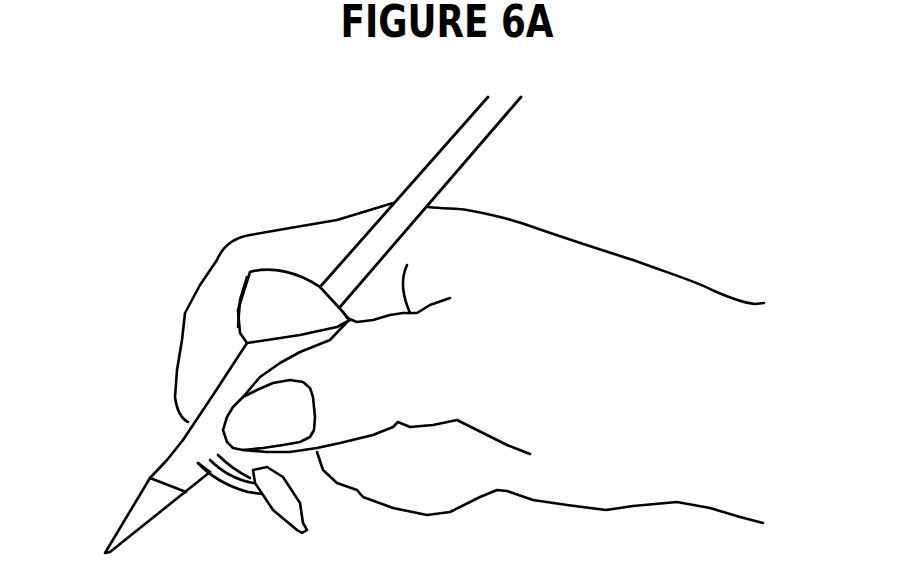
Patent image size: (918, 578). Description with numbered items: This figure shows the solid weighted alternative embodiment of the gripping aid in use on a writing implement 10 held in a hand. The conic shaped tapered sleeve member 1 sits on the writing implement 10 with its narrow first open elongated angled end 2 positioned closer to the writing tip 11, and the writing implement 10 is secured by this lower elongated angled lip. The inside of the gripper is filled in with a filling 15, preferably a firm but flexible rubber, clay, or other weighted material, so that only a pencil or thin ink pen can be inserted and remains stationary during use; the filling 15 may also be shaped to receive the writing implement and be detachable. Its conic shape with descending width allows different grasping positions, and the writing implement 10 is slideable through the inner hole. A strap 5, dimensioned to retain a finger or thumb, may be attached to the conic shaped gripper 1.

The conic shaped tapered sleeve member 1 is at (230, 372).
The first open elongated angled end 2 is at (180, 463).
The strap 5 is at (222, 487).
The writing implement 10 is at (474, 152).
The writing tip 11 is at (105, 553).
The filling 15 is at (300, 323).